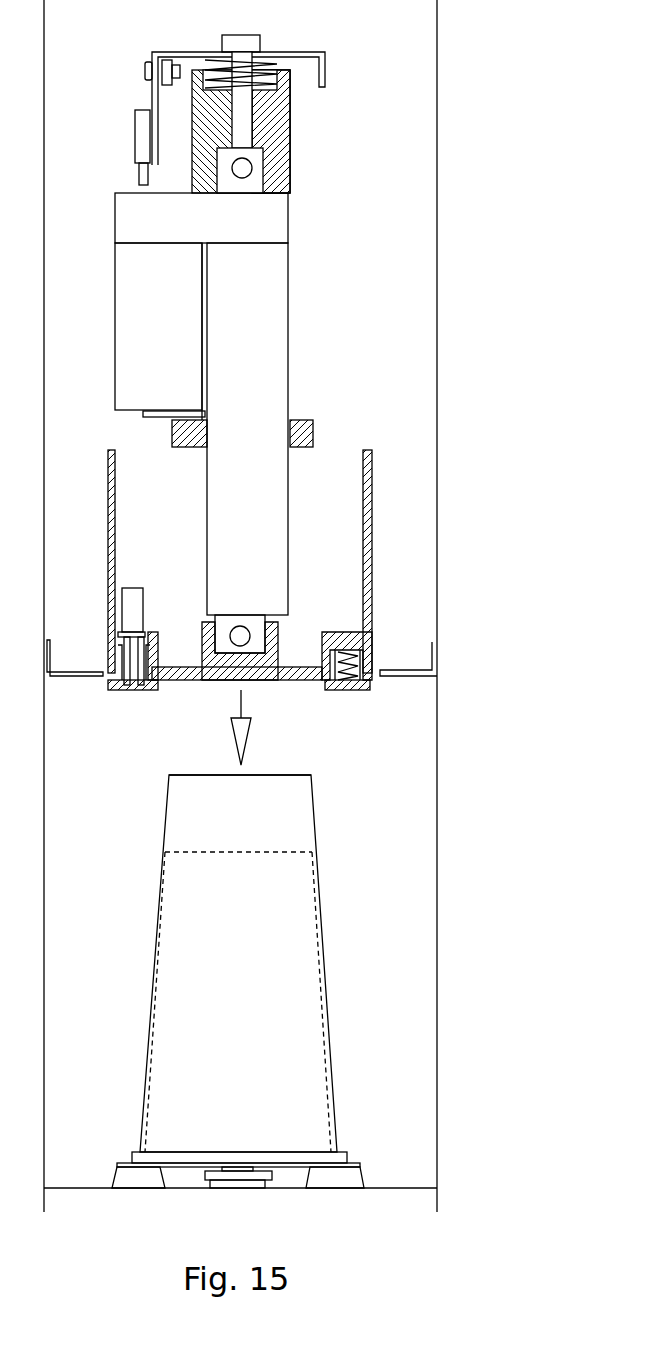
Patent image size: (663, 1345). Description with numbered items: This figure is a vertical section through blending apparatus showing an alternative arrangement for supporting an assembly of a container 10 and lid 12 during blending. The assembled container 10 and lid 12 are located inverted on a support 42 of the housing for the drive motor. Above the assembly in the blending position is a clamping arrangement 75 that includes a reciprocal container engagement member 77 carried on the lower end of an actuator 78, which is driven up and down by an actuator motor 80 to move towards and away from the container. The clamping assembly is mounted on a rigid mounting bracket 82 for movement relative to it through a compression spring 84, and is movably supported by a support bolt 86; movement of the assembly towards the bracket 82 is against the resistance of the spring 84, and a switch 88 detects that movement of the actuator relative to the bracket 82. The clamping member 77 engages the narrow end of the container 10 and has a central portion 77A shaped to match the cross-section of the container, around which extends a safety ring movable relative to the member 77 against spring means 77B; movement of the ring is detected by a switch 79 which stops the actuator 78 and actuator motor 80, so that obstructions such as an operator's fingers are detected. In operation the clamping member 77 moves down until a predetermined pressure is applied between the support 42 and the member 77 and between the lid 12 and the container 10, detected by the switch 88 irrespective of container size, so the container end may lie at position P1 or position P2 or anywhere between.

The container 10 is at (146, 1020).
The lid 12 is at (168, 1135).
The support 42 is at (118, 1180).
The clamping arrangement 75 is at (412, 538).
The container engagement member 77 is at (268, 694).
The central portion 77A is at (188, 680).
The spring means 77B is at (362, 690).
The actuator 78 is at (280, 332).
The switch 79 is at (128, 615).
The actuator motor 80 is at (133, 328).
The mounting bracket 82 is at (327, 88).
The compression spring 84 is at (208, 51).
The support bolt 86 is at (248, 43).
The switch 88 is at (140, 140).
The position P1 is at (175, 768).
The position P2 is at (185, 841).